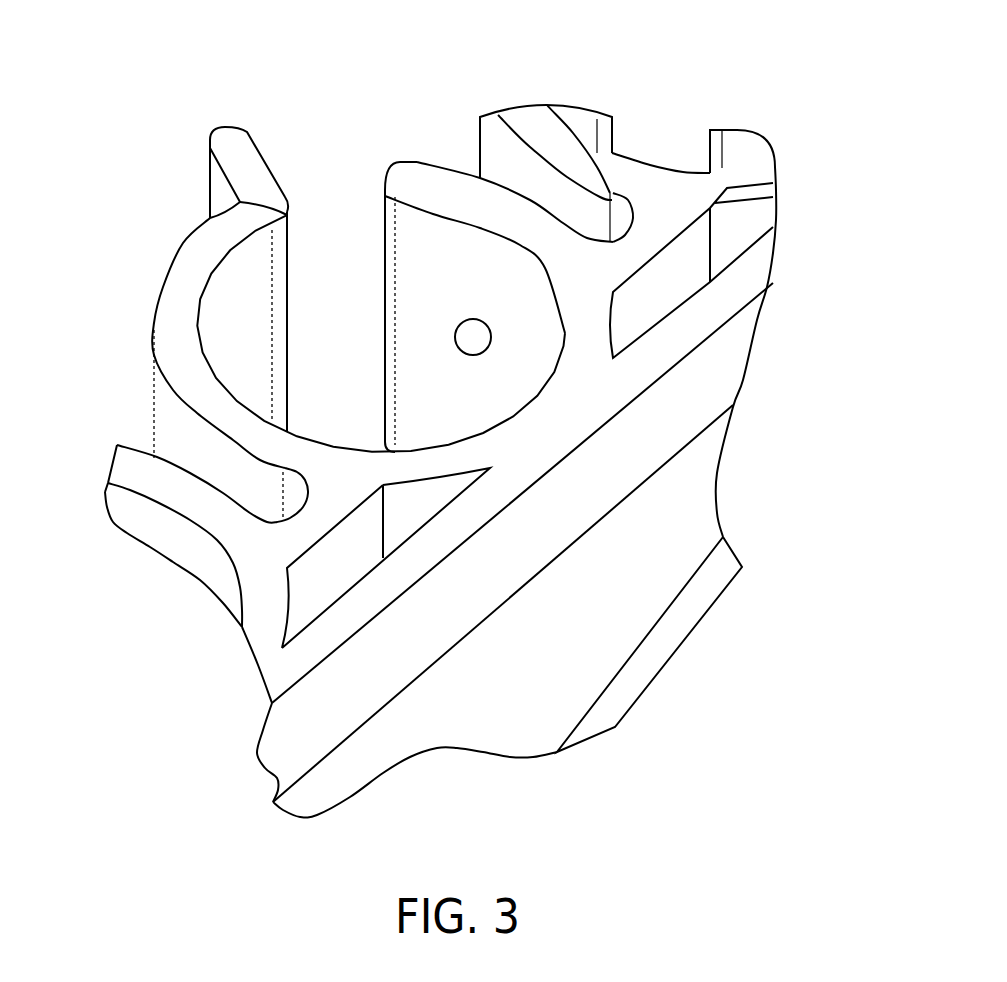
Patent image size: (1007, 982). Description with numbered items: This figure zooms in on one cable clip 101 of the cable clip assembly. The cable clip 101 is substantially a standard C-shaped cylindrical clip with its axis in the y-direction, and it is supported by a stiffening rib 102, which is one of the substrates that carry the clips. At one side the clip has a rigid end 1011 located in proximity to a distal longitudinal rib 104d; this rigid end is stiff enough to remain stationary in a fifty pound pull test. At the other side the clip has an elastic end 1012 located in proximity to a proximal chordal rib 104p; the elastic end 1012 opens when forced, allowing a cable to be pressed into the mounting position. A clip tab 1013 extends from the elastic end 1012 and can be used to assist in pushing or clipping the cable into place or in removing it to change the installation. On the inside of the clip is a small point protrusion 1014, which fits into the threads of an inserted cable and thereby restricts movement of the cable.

The cable clip 101 is at (663, 78).
The stiffening rib 102 is at (578, 602).
The rigid end 1011 is at (380, 170).
The elastic end 1012 is at (192, 212).
The clip tab 1013 is at (221, 125).
The point protrusion 1014 is at (473, 347).
The distal longitudinal rib 104d is at (640, 250).
The proximal chordal rib 104p is at (313, 522).